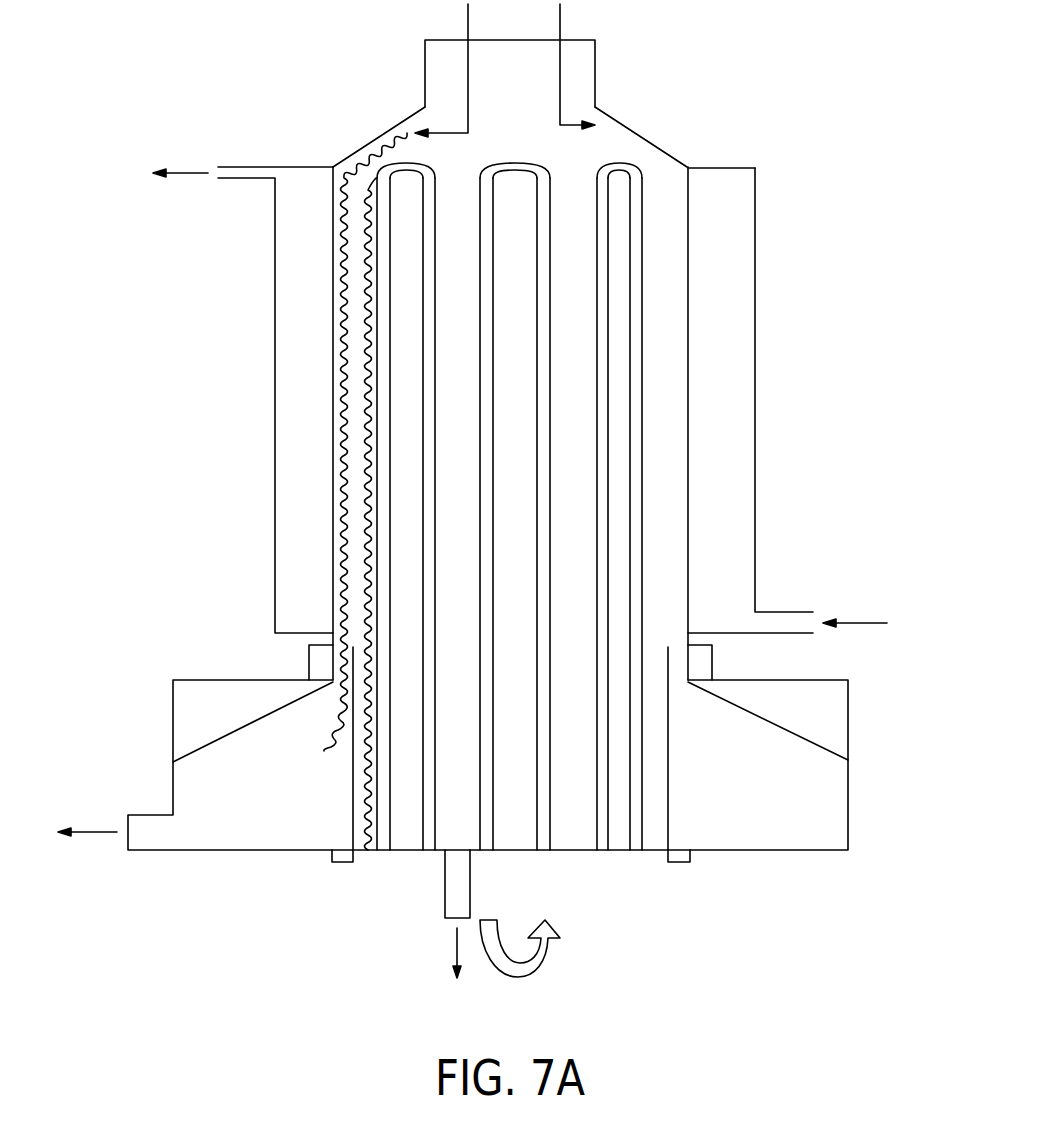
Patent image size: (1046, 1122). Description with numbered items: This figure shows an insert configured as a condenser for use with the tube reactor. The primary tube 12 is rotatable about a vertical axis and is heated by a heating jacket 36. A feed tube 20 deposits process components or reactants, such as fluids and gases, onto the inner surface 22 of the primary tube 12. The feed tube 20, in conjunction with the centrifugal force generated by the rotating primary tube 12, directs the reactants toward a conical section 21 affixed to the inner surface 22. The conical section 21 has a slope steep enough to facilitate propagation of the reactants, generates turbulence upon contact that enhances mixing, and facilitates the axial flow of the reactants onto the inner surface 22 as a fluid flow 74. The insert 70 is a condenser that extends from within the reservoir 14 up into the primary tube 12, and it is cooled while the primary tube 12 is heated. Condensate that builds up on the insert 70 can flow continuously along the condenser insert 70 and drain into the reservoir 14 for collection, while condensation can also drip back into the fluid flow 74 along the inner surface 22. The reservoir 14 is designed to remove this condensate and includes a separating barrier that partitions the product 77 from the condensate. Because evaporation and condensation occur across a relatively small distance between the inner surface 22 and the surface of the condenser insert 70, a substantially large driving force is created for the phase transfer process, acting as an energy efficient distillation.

The primary tube 12 is at (670, 335).
The reservoir 14 is at (848, 797).
The feed tube 20 is at (595, 53).
The conical section 21 is at (641, 138).
The inner surface 22 is at (690, 252).
The heating jacket 36 is at (730, 520).
The insert 70 is at (642, 375).
The fluid flow 74 is at (337, 370).
The product 77 is at (92, 834).